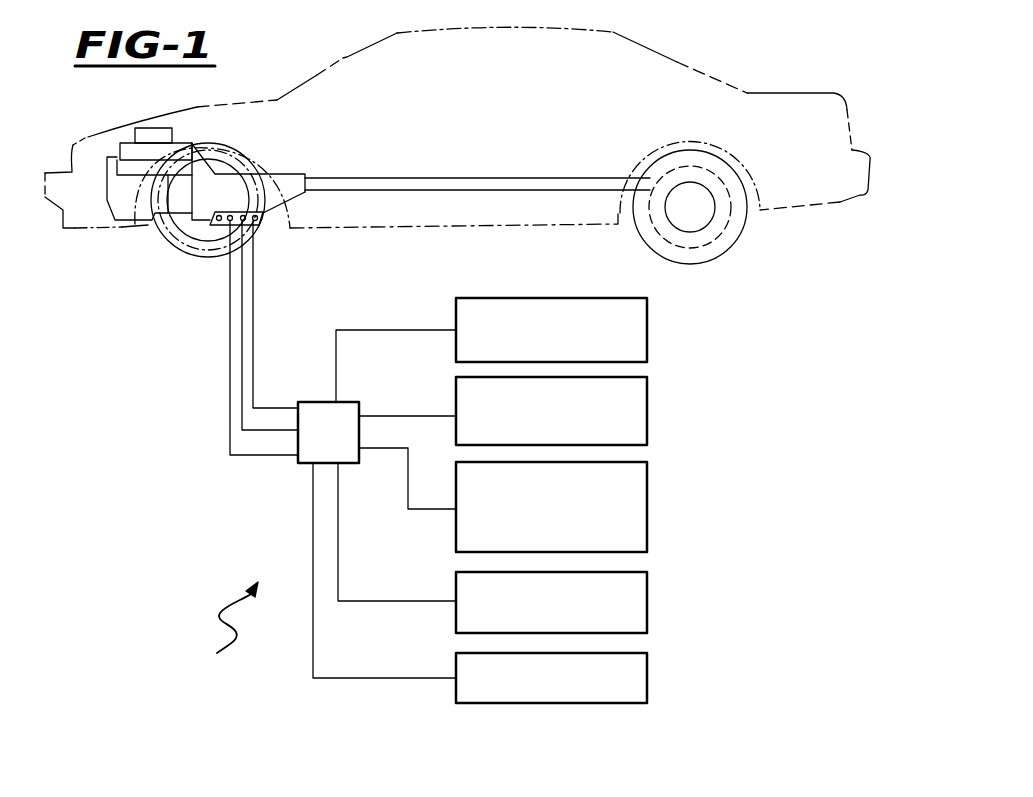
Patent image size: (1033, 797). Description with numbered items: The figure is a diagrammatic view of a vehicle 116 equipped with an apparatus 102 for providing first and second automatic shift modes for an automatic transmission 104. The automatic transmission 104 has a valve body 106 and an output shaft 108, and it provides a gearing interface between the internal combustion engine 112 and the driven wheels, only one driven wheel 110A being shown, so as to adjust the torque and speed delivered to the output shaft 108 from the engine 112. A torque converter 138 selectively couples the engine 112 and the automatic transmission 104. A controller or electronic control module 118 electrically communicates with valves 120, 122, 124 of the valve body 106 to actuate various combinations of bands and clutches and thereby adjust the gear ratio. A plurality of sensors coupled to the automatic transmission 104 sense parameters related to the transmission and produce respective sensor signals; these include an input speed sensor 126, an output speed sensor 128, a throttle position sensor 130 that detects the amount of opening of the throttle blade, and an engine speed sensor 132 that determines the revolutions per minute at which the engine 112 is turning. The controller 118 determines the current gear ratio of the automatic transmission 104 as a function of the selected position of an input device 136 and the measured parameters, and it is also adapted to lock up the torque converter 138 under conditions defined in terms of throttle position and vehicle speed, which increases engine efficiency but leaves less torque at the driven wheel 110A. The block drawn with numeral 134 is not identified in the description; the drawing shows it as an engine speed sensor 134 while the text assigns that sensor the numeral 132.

The apparatus 102 is at (216, 627).
The automatic transmission 104 is at (292, 172).
The valve body 106 is at (292, 207).
The output shaft 108 is at (342, 188).
The driven wheel 110A is at (743, 227).
The internal combustion engine 112 is at (93, 172).
The vehicle 116 is at (677, 62).
The controller 118 is at (298, 462).
The valve 120 is at (222, 226).
The valve 122 is at (247, 228).
The valve 124 is at (270, 226).
The input speed sensor 126 is at (647, 348).
The output speed sensor 128 is at (647, 423).
The throttle position sensor 130 is at (456, 522).
The engine speed sensor 132 is at (173, 137).
The engine speed sensor 134 is at (648, 608).
The input device 136 is at (648, 680).
The torque converter 138 is at (157, 236).